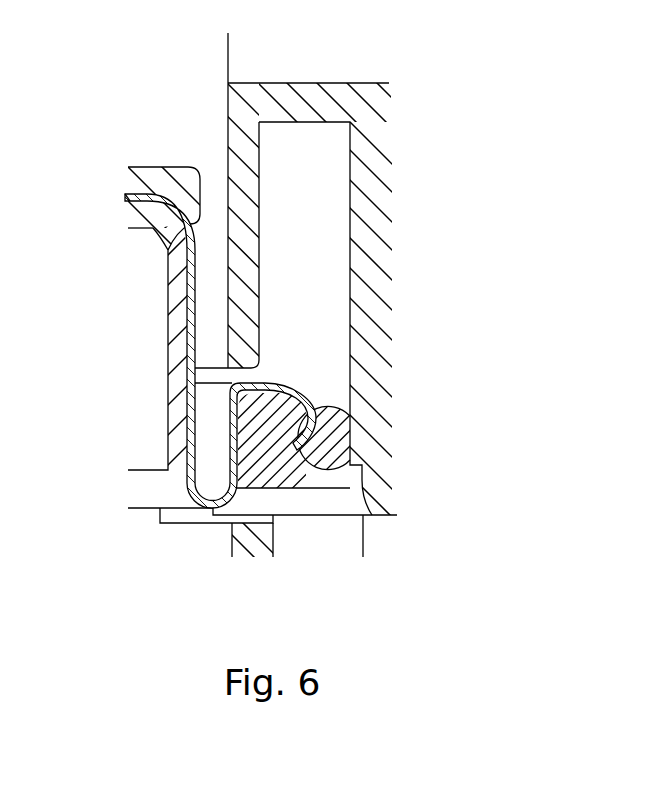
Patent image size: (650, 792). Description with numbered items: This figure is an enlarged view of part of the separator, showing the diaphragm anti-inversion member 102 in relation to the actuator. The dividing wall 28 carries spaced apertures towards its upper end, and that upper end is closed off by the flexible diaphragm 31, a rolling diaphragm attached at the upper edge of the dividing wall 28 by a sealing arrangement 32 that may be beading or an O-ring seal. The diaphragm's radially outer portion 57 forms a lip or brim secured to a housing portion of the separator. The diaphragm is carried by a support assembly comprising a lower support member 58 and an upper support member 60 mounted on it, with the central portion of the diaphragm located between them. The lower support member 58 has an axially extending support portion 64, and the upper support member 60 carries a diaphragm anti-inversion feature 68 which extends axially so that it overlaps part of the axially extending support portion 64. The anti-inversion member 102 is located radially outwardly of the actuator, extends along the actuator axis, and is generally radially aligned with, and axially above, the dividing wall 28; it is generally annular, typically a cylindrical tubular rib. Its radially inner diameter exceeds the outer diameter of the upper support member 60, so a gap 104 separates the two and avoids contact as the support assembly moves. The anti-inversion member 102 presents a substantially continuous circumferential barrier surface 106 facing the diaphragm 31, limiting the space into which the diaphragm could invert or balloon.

The dividing wall 28 is at (273, 540).
The flexible diaphragm 31 is at (214, 320).
The sealing arrangement 32 is at (321, 382).
The radially outer portion 57 is at (315, 411).
The lower support member 58 is at (120, 335).
The upper support member 60 is at (325, 396).
The axially extending support portion 64 is at (168, 389).
The diaphragm anti-inversion feature 68 is at (190, 164).
The diaphragm anti-inversion member 102 is at (245, 297).
The gap 104 is at (218, 197).
The barrier surface 106 is at (228, 133).